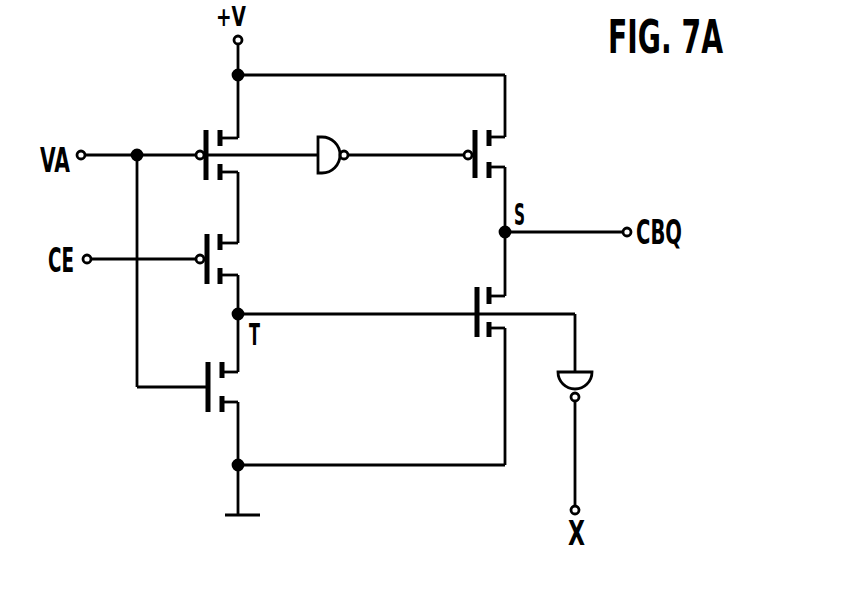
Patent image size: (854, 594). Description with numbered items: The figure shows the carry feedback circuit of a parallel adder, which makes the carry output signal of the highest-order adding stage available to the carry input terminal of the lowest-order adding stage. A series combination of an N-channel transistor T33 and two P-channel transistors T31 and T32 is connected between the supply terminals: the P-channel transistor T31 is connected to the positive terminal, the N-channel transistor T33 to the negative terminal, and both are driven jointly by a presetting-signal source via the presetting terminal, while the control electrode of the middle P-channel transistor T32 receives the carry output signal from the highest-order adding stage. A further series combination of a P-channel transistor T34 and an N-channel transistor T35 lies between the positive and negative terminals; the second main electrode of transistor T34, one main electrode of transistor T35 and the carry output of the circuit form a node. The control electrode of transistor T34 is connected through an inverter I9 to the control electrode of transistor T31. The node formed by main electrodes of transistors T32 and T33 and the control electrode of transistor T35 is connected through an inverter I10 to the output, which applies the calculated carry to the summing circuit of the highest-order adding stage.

The P-channel transistor T31 is at (208, 152).
The P-channel transistor T32 is at (206, 249).
The N-channel transistor T33 is at (208, 381).
The P-channel transistor T34 is at (474, 143).
The N-channel transistor T35 is at (478, 310).
The inverter I9 is at (391, 172).
The inverter I10 is at (591, 396).